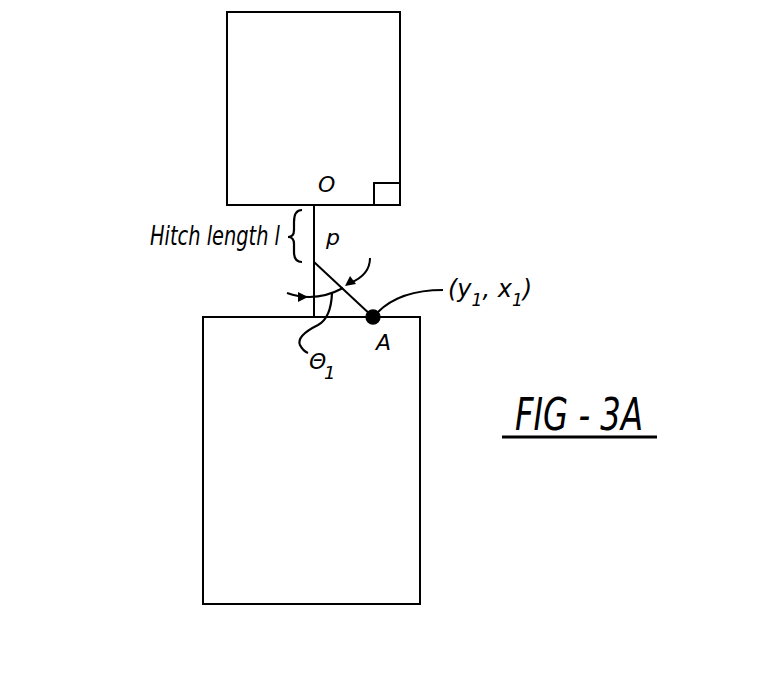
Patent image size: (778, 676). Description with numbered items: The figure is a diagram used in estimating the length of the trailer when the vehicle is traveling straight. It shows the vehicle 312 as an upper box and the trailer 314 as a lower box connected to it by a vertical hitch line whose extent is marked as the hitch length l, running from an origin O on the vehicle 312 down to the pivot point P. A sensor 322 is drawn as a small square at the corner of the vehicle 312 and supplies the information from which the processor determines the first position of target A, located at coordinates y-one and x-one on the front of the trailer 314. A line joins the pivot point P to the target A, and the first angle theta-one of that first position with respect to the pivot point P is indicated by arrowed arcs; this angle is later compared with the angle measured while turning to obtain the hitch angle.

The vehicle 312 is at (248, 63).
The trailer 314 is at (233, 443).
The sensor 322 is at (388, 192).